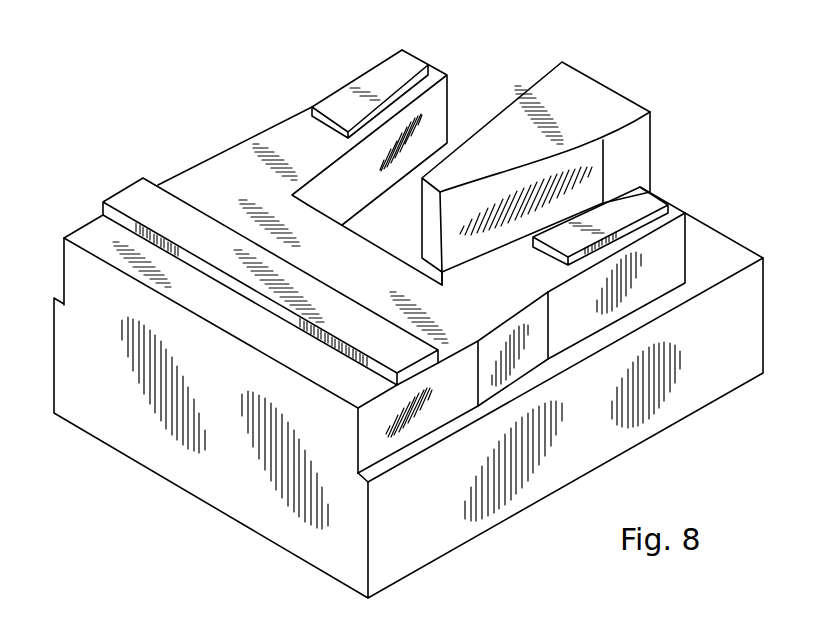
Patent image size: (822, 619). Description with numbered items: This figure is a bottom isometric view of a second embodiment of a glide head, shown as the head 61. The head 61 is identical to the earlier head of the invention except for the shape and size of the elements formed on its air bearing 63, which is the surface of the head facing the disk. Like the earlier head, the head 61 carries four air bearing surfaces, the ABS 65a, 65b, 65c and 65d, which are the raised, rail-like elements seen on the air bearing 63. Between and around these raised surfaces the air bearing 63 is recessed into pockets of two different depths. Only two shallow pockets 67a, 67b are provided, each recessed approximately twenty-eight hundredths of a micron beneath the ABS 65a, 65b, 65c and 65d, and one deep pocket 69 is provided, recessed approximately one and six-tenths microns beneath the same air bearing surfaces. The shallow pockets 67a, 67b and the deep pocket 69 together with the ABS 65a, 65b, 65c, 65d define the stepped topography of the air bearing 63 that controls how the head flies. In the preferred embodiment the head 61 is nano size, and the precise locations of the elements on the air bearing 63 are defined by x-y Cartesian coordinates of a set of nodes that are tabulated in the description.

The head 61 is at (146, 496).
The air bearing 63 is at (343, 57).
The ABS 65a is at (138, 204).
The ABS 65b is at (337, 106).
The ABS 65c is at (636, 206).
The ABS 65d is at (602, 108).
The shallow pocket 67a is at (92, 238).
The shallow pocket 67b is at (217, 178).
The deep pocket 69 is at (722, 256).